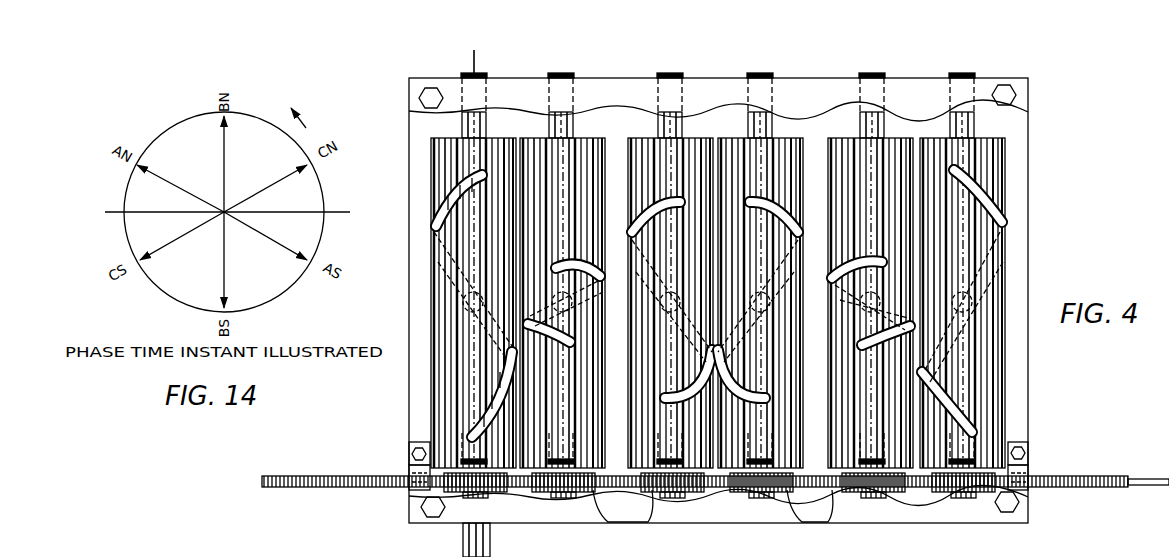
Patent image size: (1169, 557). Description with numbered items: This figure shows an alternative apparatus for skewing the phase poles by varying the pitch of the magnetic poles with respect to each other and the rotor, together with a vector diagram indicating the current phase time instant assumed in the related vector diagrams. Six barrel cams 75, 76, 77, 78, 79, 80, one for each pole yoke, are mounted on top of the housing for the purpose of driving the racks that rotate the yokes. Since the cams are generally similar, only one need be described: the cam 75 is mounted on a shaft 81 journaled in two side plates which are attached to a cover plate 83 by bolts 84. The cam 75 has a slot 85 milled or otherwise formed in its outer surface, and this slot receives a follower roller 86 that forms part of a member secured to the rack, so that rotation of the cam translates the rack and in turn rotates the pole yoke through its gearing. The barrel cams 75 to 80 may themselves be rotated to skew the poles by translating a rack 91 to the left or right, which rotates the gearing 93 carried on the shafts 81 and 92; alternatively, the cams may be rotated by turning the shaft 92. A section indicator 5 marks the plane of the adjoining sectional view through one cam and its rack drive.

The section line 5- 5 is at (470, 57).
The barrel cam 75 is at (432, 396).
The barrel cam 76 is at (606, 380).
The barrel cam 77 is at (628, 420).
The barrel cam 78 is at (803, 380).
The barrel cam 79 is at (828, 420).
The barrel cam 80 is at (1008, 400).
The shaft 81 is at (656, 126).
The cover plate 83 is at (418, 113).
The bolts 84 is at (419, 104).
The slot 85 is at (433, 218).
The follower roller 86 is at (441, 308).
The rack 91 is at (1098, 477).
The shaft 92 is at (1060, 526).
The gearing 93 is at (608, 523).